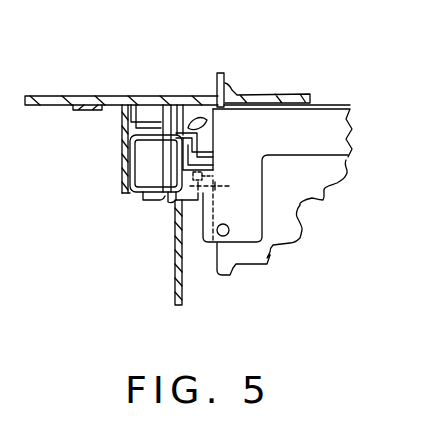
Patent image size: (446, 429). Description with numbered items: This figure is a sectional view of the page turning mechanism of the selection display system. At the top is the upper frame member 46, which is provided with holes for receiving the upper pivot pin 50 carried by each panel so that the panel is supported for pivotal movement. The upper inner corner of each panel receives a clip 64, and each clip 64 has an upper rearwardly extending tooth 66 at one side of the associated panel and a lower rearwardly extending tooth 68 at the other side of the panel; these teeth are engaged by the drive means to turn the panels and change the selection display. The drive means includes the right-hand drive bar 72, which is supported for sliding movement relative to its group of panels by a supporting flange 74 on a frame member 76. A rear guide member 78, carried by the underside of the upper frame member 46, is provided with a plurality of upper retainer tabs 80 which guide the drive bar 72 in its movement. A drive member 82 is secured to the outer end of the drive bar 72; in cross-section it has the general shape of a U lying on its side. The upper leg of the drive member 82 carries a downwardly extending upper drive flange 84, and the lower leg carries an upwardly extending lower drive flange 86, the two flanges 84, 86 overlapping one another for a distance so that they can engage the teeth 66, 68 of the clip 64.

The upper frame member 46 is at (158, 96).
The upper pivot pin 50 is at (228, 74).
The clip 64 is at (320, 122).
The upper rearwardly extending tooth 66 is at (207, 119).
The lower rearwardly extending tooth 68 is at (208, 178).
The right-hand drive bar 72 is at (137, 156).
The supporting flange 74 is at (148, 206).
The frame member 76 is at (174, 268).
The rear guide member 78 is at (131, 181).
The upper retainer tab 80 is at (137, 123).
The drive member 82 is at (127, 194).
The upper drive flange 84 is at (195, 142).
The lower drive flange 86 is at (216, 187).